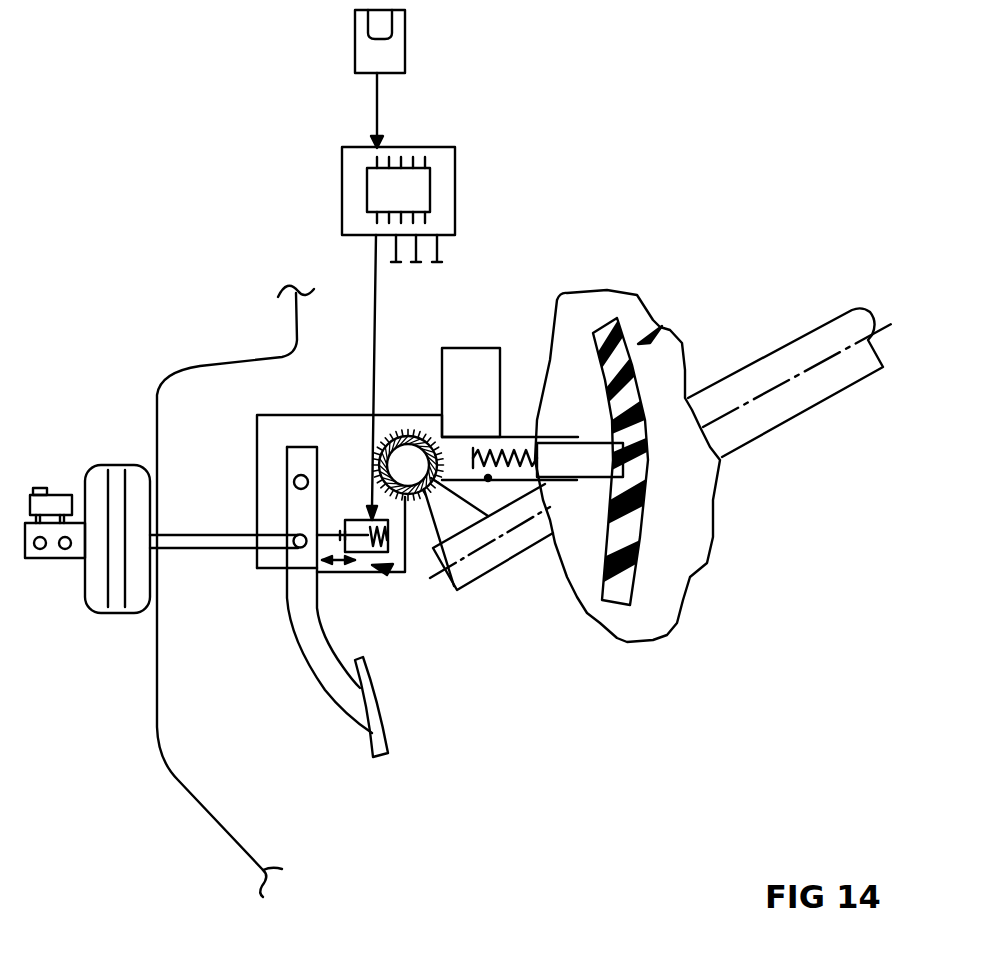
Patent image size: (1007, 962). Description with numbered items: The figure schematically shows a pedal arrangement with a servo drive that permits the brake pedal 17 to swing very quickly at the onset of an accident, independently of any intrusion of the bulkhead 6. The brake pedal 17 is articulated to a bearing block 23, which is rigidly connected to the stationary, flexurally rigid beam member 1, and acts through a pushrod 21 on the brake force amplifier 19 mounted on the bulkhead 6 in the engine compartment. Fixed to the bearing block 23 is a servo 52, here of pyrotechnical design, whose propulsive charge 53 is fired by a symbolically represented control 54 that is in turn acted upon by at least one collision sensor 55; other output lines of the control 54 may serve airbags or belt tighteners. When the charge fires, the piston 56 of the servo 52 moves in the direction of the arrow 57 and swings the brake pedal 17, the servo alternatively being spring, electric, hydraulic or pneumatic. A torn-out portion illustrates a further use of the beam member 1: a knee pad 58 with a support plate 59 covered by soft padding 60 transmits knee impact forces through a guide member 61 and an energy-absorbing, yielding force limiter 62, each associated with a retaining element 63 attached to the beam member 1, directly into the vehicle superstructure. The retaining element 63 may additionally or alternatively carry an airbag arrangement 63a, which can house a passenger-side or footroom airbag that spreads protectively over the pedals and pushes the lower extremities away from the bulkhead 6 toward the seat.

The beam member 1 is at (380, 424).
The bulkhead 6 is at (178, 780).
The brake pedal 17 is at (328, 673).
The brake force amplifier 19 is at (100, 487).
The pushrod 21 is at (192, 540).
The bearing block 23 is at (282, 427).
The servo 52 is at (388, 548).
The propulsive charge 53 is at (405, 572).
The control 54 is at (355, 192).
The collision sensor 55 is at (372, 57).
The piston 56 is at (350, 520).
The arrow 57 is at (385, 568).
The knee pad 58 is at (627, 375).
The support plate 59 is at (650, 334).
The soft padding 60 is at (648, 366).
The guide member 61 is at (600, 463).
The force limiter 62 is at (540, 495).
The retaining element 63 is at (488, 478).
The airbag arrangement 63a is at (467, 360).